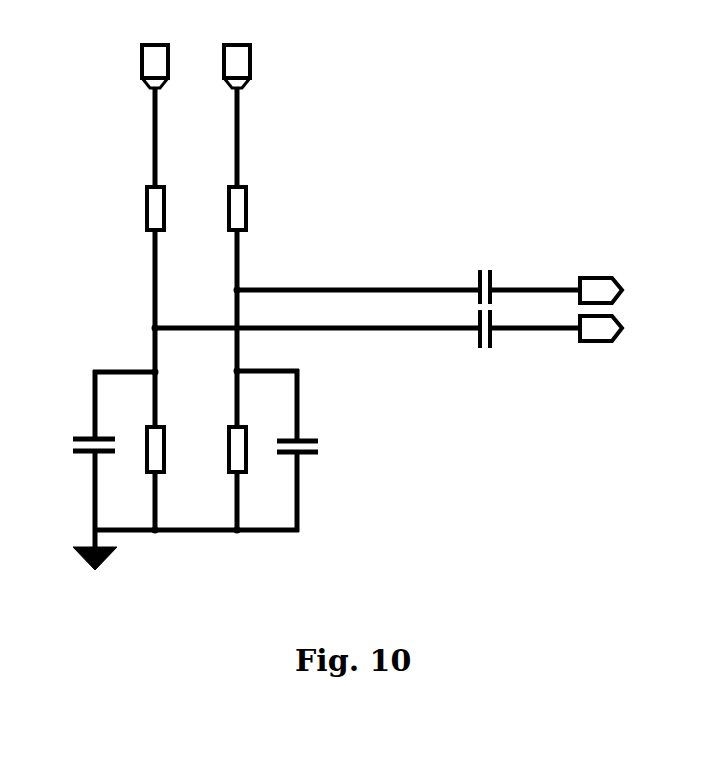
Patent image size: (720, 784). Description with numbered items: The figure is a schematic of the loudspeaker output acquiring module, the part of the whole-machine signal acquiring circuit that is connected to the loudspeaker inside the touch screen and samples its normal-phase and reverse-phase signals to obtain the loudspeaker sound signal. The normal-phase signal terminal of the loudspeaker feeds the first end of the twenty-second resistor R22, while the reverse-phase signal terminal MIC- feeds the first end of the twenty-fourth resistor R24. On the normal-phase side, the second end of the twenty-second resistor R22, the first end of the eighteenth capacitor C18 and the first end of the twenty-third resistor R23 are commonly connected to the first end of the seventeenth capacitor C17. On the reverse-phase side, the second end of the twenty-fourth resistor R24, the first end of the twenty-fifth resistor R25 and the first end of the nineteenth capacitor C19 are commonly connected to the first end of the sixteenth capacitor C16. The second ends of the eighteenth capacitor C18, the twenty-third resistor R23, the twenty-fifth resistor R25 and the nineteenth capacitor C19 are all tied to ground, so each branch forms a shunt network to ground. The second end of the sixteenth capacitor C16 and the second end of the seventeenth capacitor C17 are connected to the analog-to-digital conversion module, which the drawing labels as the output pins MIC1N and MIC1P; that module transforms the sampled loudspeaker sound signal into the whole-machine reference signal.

The reverse-phase signal terminal MIC- is at (237, 101).
The twenty-second resistor R22 is at (171, 208).
The twenty-fourth resistor R24 is at (254, 208).
The twenty-third resistor R23 is at (173, 449).
The twenty-fifth resistor R25 is at (252, 456).
The sixteenth capacitor C16 is at (484, 278).
The seventeenth capacitor C17 is at (484, 343).
The eighteenth capacitor C18 is at (73, 447).
The nineteenth capacitor C19 is at (316, 450).
The microphone negative output pin MIC1N is at (624, 280).
The microphone positive output pin MIC1P is at (622, 349).